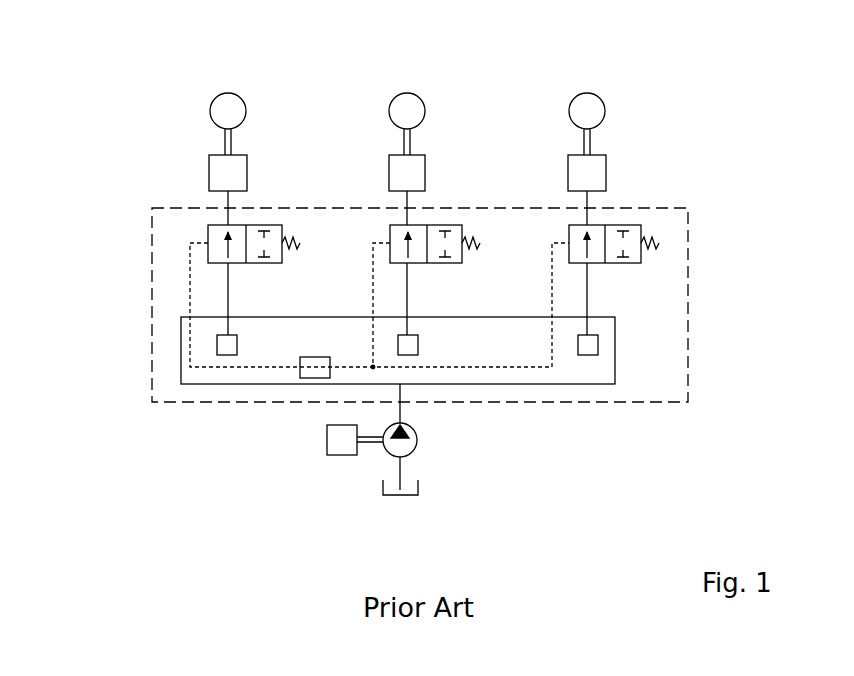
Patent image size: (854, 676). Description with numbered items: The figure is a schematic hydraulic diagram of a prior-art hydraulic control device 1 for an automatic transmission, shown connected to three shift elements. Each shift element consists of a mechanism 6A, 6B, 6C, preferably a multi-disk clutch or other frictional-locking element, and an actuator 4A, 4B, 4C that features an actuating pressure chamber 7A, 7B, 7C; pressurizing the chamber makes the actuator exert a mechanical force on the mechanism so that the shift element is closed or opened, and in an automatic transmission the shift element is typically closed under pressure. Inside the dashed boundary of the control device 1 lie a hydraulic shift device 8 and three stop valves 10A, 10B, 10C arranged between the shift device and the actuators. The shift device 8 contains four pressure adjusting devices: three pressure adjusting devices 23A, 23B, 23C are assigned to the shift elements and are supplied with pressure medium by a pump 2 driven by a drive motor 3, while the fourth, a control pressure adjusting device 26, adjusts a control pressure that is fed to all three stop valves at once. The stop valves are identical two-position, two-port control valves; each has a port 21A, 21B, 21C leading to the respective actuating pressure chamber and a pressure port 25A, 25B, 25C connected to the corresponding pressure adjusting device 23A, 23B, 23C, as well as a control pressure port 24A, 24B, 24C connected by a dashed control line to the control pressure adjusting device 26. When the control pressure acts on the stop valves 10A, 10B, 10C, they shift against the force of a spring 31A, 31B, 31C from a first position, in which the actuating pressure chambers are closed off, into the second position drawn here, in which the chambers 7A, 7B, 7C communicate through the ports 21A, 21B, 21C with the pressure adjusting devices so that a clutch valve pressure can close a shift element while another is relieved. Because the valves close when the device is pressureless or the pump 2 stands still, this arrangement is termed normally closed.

The hydraulic control device 1 is at (692, 253).
The pump 2 is at (403, 450).
The drive motor 3 is at (343, 447).
The hydraulic shift device 8 is at (190, 372).
The control pressure adjusting device 26 is at (315, 370).
The actuator 4A is at (206, 160).
The actuator 4B is at (424, 147).
The actuator 4C is at (609, 165).
The mechanism 6A is at (217, 110).
The mechanism 6B is at (400, 102).
The mechanism 6C is at (587, 107).
The actuating pressure chamber 7A is at (212, 178).
The actuating pressure chamber 7B is at (403, 173).
The actuating pressure chamber 7C is at (600, 180).
The stop valve 10A is at (249, 275).
The stop valve 10B is at (454, 270).
The stop valve 10C is at (638, 270).
The port 21A is at (217, 214).
The port 21B is at (410, 196).
The port 21C is at (585, 218).
The pressure adjusting device 23A is at (218, 345).
The pressure adjusting device 23B is at (410, 347).
The pressure adjusting device 23C is at (587, 348).
The control pressure port 24A is at (187, 240).
The control pressure port 24B is at (382, 247).
The control pressure port 24C is at (560, 255).
The pressure port 25A is at (226, 282).
The pressure port 25B is at (410, 296).
The pressure port 25C is at (590, 272).
The spring 31A is at (291, 240).
The spring 31B is at (475, 245).
The spring 31C is at (661, 245).